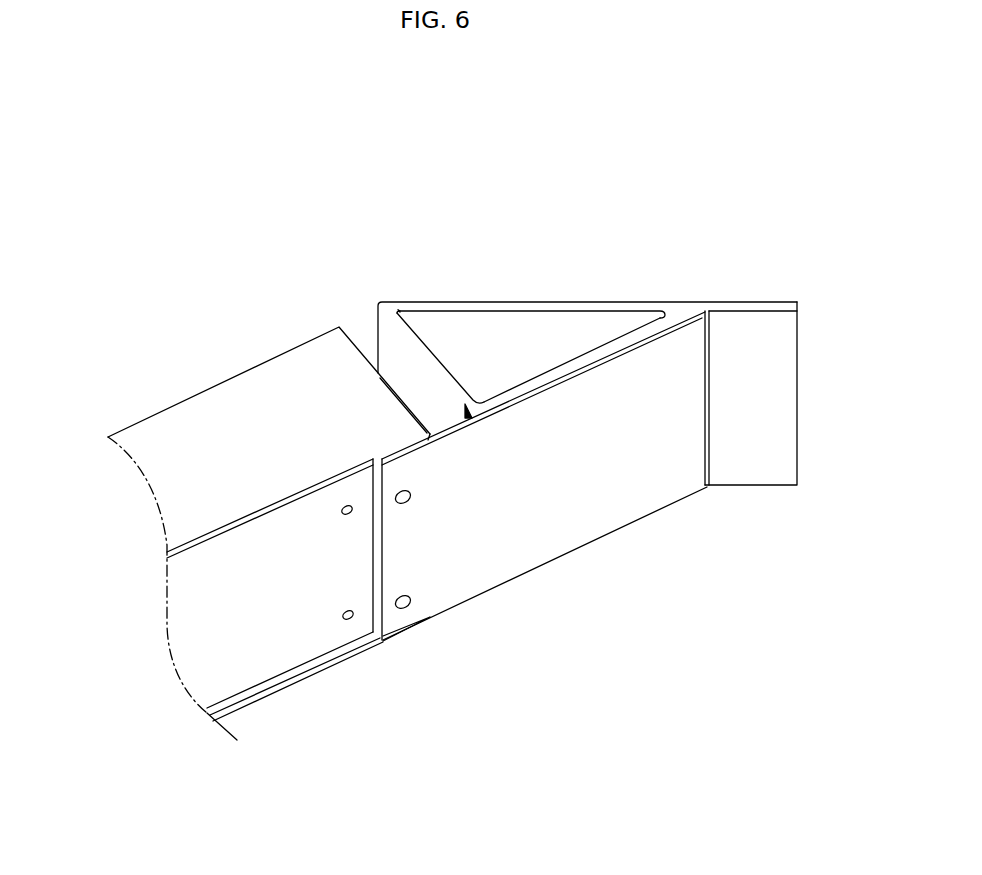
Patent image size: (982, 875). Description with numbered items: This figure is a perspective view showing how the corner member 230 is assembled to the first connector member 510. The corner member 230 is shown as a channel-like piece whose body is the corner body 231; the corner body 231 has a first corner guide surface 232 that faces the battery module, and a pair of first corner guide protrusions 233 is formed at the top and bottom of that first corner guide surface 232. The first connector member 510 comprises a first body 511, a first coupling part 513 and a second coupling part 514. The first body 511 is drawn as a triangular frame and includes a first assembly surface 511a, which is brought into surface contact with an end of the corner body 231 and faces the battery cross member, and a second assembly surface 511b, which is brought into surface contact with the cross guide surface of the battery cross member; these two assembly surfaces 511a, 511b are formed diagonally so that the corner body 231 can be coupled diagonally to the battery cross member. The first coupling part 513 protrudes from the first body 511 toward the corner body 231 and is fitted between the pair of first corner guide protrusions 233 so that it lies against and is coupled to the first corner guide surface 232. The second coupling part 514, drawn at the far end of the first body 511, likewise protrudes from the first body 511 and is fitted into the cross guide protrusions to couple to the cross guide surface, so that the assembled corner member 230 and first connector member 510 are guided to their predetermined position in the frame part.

The corner member 230 is at (130, 324).
The corner body 231 is at (186, 424).
The first corner guide surface 232 is at (245, 645).
The first corner guide protrusion 233 is at (282, 495).
The first connector member 510 is at (540, 198).
The first body 511 is at (547, 307).
The first assembly surface 511a is at (420, 387).
The second assembly surface 511b is at (627, 302).
The first coupling part 513 is at (443, 580).
The second coupling part 514 is at (755, 473).